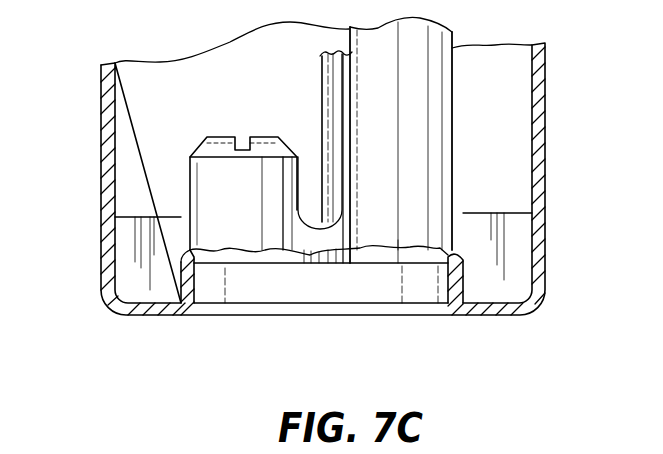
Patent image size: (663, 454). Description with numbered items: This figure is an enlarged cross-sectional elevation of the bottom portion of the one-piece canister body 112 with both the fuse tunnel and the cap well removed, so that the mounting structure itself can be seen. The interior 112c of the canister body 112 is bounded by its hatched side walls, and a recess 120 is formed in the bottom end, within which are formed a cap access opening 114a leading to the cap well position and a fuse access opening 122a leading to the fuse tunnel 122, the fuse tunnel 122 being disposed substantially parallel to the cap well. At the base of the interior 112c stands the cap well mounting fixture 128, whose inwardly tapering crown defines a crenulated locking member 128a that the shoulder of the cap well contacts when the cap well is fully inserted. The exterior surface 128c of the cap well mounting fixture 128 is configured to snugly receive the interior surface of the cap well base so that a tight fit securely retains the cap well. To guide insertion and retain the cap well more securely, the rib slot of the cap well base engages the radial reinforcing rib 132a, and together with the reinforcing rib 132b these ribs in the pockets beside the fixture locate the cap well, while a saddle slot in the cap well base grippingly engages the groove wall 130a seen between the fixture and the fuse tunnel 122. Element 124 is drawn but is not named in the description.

The canister body 112 is at (549, 93).
The interior 112c is at (258, 93).
The cap access opening 114a is at (233, 255).
The recess 120 is at (372, 295).
The fuse tunnel 122 is at (441, 109).
The fuse access opening 122a is at (418, 258).
The inner tube 124 is at (326, 82).
The cap well mounting fixture 128 is at (181, 168).
The locking member 128a is at (202, 148).
The exterior surface 128c is at (203, 212).
The groove wall 130a is at (328, 240).
The radial reinforcing rib 132a is at (133, 241).
The reinforcing rib 132b is at (517, 247).